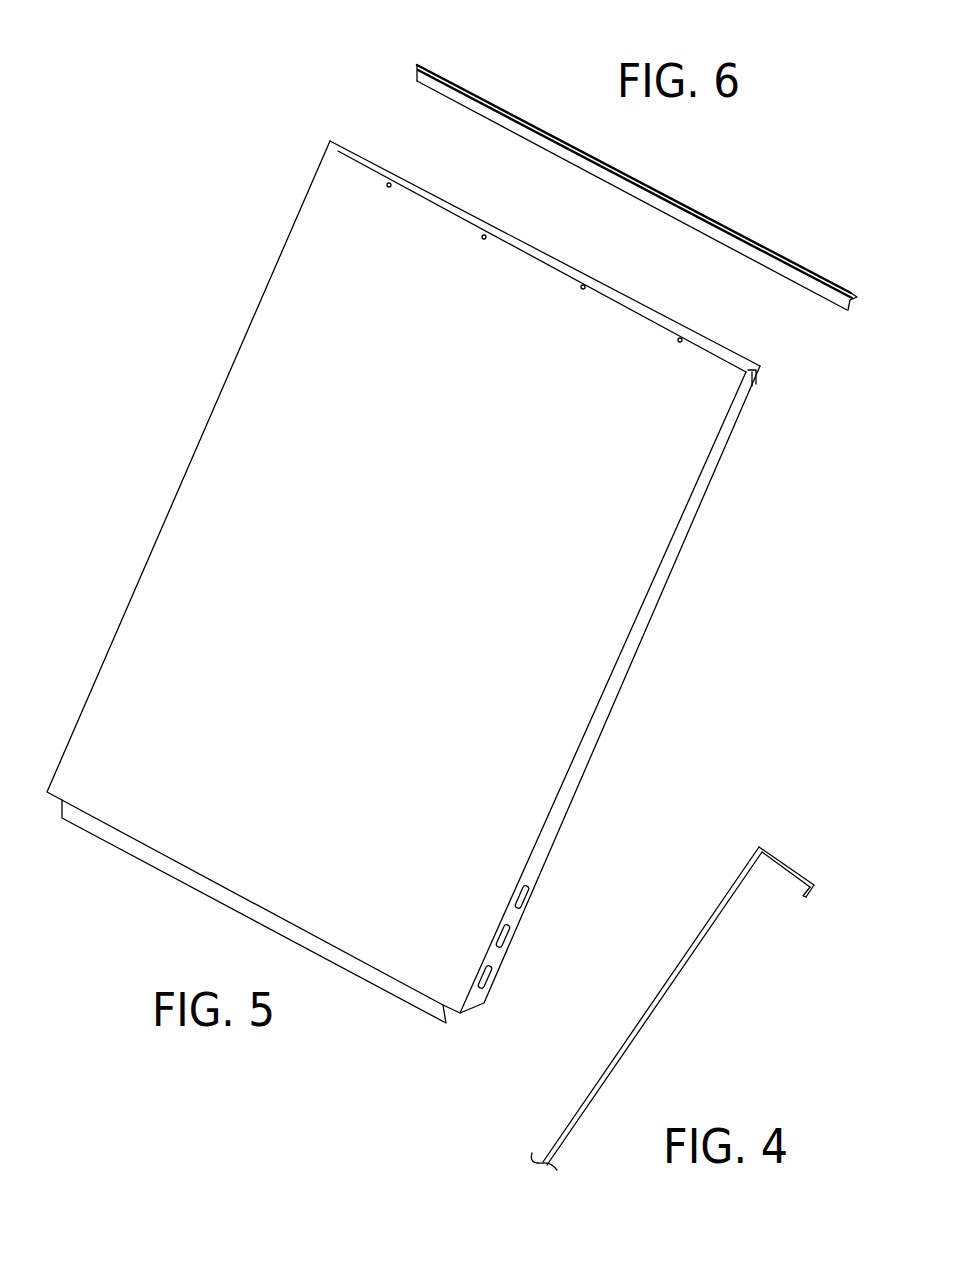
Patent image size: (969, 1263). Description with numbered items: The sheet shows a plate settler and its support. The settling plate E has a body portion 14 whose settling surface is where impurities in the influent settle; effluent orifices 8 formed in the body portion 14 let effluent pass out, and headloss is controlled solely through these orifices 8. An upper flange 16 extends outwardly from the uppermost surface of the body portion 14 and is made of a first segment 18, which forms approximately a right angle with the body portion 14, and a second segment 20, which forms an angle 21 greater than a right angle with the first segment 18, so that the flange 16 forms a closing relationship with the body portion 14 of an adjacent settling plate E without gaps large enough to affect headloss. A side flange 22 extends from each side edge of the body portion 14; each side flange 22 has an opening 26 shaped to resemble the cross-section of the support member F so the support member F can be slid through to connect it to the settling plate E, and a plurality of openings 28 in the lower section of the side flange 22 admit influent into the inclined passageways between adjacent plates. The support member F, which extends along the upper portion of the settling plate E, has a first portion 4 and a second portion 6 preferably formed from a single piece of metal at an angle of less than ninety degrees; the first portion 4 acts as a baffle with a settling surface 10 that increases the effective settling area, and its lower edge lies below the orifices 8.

In FIG. 6, the first portion 4 is at (686, 228).
In FIG. 6, the second portion 6 is at (738, 230).
In FIG. 6, the settling surface 10 is at (637, 198).
In FIG. 6, the support member F is at (516, 108).
In FIG. 5, the settling plate E is at (450, 582).
In FIG. 5, the effluent orifices 8 is at (480, 240).
In FIG. 5, the body portion 14 is at (396, 580).
In FIG. 4, the body portion 14 is at (608, 1067).
In FIG. 5, the side flange 22 is at (622, 689).
In FIG. 5, the opening 26 is at (757, 376).
In FIG. 5, the openings 28 is at (527, 895).
In FIG. 4, the upper flange 16 is at (798, 875).
In FIG. 4, the first segment 18 is at (767, 843).
In FIG. 4, the second segment 20 is at (814, 890).
In FIG. 4, the angle 21 is at (800, 890).